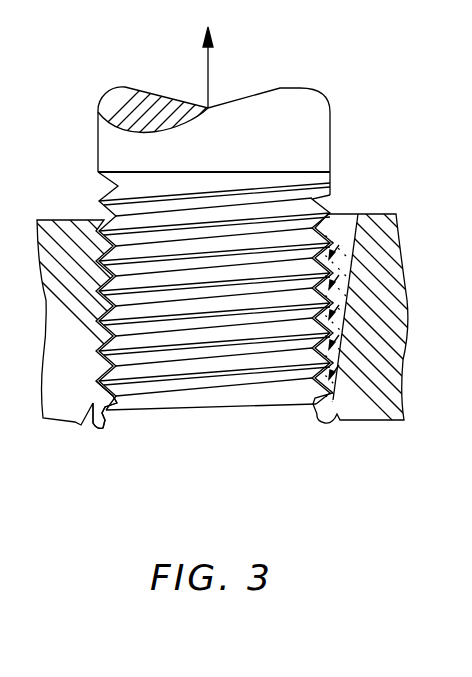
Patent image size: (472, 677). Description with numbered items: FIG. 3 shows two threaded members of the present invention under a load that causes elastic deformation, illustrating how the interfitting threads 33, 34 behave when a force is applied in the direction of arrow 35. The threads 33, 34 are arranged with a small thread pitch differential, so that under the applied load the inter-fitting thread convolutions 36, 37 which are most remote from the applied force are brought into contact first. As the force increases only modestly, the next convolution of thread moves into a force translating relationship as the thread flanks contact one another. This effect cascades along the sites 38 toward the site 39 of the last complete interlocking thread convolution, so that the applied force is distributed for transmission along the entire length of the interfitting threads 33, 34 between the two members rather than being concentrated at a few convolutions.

The interfitting thread 33 is at (100, 213).
The interfitting thread 34 is at (108, 218).
The arrow 35 is at (212, 62).
The inter-fitting thread convolution 36 is at (95, 398).
The inter-fitting thread convolution 37 is at (127, 413).
The sites 38 is at (358, 222).
The site of last complete interlocking thread convolution 39 is at (329, 229).